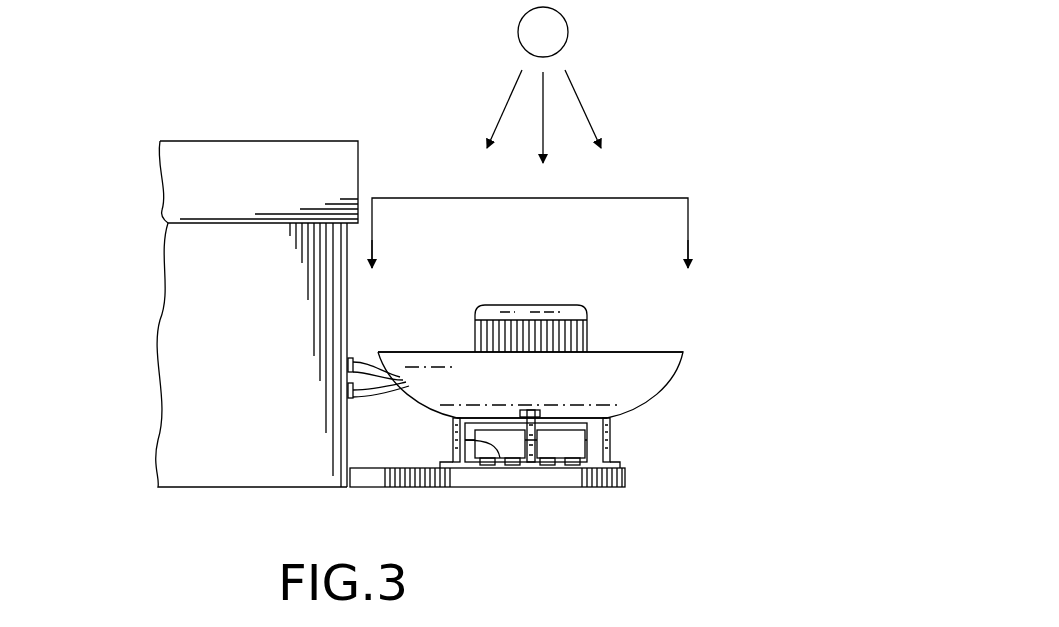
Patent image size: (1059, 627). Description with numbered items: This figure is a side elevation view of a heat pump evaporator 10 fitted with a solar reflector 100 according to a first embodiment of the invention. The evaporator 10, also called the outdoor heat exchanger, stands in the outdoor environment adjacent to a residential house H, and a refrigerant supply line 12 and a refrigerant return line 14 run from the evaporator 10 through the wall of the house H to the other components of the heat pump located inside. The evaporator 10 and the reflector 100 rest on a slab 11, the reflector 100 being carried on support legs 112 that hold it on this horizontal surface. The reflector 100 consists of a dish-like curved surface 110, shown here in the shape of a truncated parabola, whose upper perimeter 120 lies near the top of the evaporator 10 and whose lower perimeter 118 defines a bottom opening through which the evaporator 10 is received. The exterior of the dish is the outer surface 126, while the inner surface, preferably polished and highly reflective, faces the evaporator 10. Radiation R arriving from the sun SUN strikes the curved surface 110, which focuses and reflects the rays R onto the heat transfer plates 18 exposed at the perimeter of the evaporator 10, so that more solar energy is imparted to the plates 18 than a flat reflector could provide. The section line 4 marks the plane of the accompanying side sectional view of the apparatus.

The house H is at (306, 136).
The sun SUN is at (568, 26).
The solar radiation R is at (543, 116).
The section line 4- 4 is at (543, 233).
The heat pump evaporator 10 is at (528, 304).
The slab 11 is at (625, 480).
The refrigerant supply line 12 is at (362, 358).
The refrigerant return line 14 is at (367, 401).
The heat transfer plates 18 is at (587, 342).
The solar reflector 100 is at (674, 344).
The curved surface 110 is at (650, 394).
The support legs 112 is at (610, 440).
The lower perimeter 118 is at (557, 421).
The upper perimeter 120 is at (428, 352).
The outer surface 126 is at (620, 398).